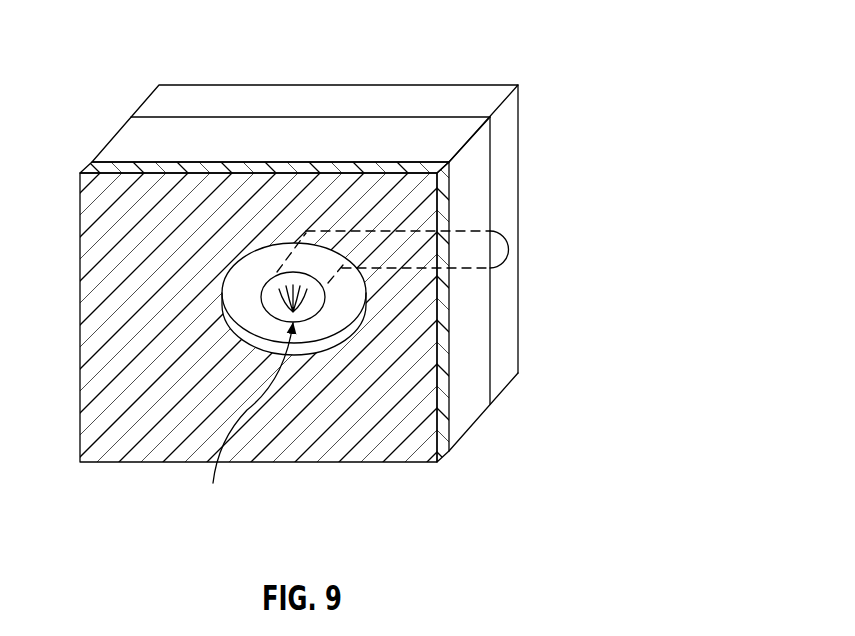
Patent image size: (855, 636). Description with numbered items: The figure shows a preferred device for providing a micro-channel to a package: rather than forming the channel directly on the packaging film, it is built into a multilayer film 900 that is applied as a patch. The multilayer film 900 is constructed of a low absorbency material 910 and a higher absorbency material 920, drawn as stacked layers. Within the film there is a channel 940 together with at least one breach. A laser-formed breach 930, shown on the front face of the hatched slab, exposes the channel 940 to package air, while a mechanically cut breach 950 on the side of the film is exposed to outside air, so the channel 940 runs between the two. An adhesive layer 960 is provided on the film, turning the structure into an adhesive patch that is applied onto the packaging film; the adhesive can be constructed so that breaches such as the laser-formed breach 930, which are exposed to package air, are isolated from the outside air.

The multilayer film 900 is at (130, 45).
The low absorbency material 910 is at (122, 140).
The higher absorbency material 920 is at (157, 98).
The laser-formed breach 930 is at (245, 278).
The channel 940 is at (407, 270).
The mechanically cut breach 950 is at (496, 250).
The adhesive layer 960 is at (403, 435).